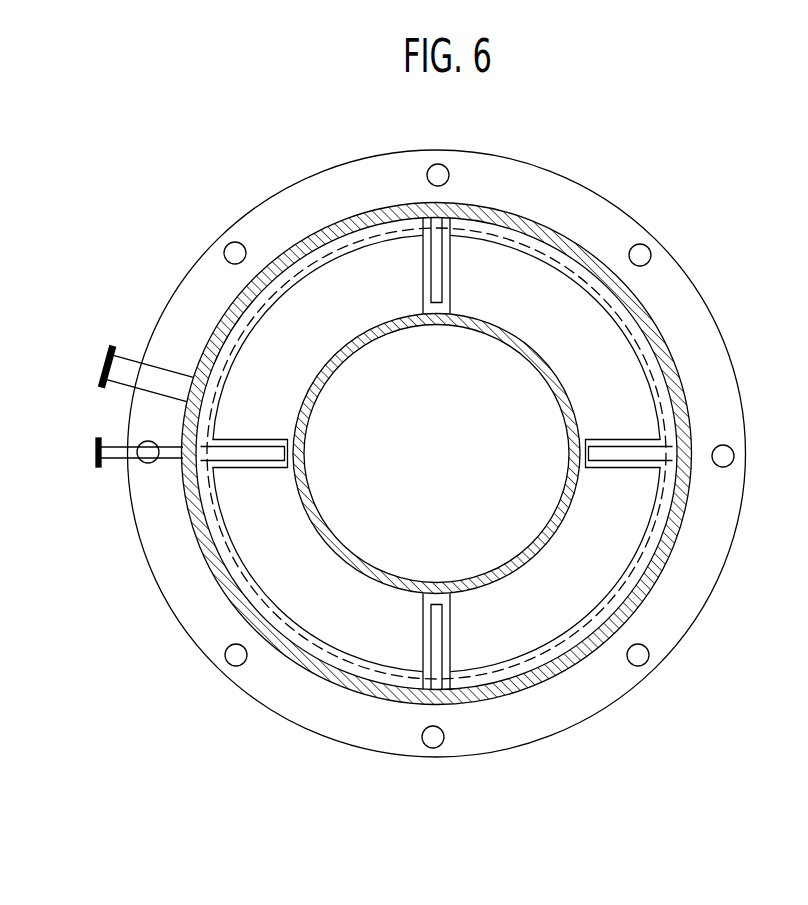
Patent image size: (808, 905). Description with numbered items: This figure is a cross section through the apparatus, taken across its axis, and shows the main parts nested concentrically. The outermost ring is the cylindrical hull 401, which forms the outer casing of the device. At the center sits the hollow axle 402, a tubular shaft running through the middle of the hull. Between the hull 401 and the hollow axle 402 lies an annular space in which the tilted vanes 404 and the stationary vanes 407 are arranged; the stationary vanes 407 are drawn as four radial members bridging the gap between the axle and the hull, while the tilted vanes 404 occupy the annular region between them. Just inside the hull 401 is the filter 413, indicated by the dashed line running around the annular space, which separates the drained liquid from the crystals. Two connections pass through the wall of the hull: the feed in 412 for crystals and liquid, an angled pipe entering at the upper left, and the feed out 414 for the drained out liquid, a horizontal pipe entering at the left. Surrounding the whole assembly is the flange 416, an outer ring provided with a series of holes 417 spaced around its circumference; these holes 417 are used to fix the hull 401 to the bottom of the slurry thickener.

The cylindrical hull 401 is at (645, 313).
The hollow axle 402 is at (567, 395).
The tilted vanes 404 is at (562, 307).
The stationary vanes 407 is at (652, 453).
The feed in for crystals and liquid 412 is at (127, 363).
The filter 413 is at (547, 258).
The feed out for the drained out liquid 414 is at (111, 455).
The flange 416 is at (688, 570).
The holes 417 is at (641, 655).